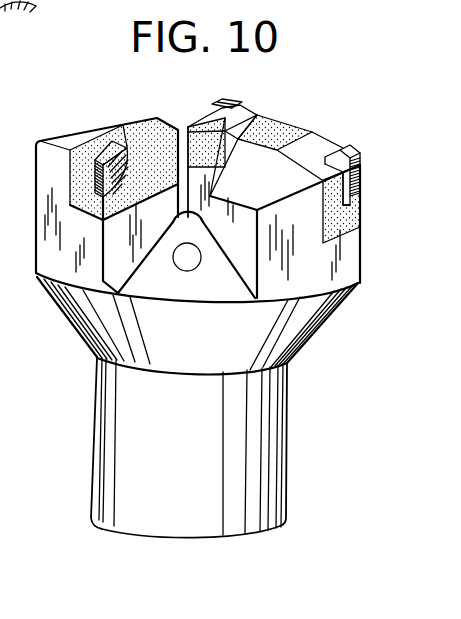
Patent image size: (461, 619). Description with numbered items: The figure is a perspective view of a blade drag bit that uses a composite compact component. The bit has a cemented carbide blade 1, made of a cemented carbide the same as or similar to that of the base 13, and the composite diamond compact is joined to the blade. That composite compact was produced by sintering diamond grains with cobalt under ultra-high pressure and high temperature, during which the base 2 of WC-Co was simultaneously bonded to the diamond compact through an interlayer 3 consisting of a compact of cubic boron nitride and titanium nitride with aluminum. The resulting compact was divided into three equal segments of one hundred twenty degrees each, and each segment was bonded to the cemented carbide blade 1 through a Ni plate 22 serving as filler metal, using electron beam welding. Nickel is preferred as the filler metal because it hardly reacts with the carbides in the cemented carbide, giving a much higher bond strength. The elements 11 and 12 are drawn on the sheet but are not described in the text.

The cemented carbide blade 1 is at (357, 223).
The base 2 is at (187, 271).
The interlayer 3 is at (322, 283).
The hard metal insert 11 is at (343, 156).
The insert recess 12 is at (357, 181).
The base 13 is at (345, 188).
The Ni plate 22 is at (333, 160).